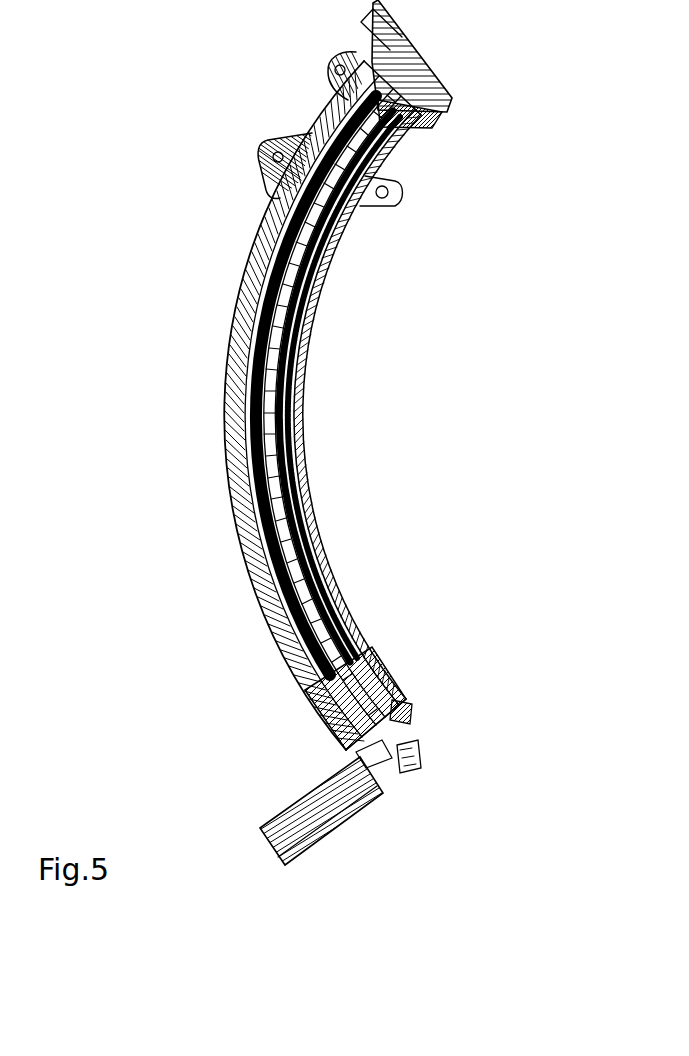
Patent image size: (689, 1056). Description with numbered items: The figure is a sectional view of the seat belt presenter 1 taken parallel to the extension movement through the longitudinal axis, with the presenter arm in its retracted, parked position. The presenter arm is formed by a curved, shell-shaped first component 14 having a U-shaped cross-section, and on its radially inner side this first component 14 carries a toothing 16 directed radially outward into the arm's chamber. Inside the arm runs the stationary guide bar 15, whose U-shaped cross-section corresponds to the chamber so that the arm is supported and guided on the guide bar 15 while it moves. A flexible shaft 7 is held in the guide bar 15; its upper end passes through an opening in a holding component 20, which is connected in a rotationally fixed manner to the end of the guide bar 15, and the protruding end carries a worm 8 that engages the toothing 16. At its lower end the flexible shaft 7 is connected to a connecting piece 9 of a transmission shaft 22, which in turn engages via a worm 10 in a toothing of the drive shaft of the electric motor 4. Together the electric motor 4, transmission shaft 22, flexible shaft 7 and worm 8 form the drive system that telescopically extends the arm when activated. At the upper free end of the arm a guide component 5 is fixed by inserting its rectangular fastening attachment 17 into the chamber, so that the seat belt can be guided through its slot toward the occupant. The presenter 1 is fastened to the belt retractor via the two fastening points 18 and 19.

The seat belt presenter 1 is at (160, 393).
The electric motor 4 is at (355, 805).
The guide component 5 is at (408, 72).
The flexible shaft 7 is at (282, 563).
The worm 8 is at (345, 166).
The connecting piece 9 is at (362, 685).
The worm 10 is at (410, 753).
The first component 14 is at (403, 118).
The guide bar 15 is at (253, 293).
The toothing 16 is at (347, 203).
The fastening attachment 17 is at (397, 103).
The fastening point 18 is at (276, 152).
The fastening point 19 is at (337, 66).
The holding component 20 is at (312, 200).
The transmission shaft 22 is at (395, 730).